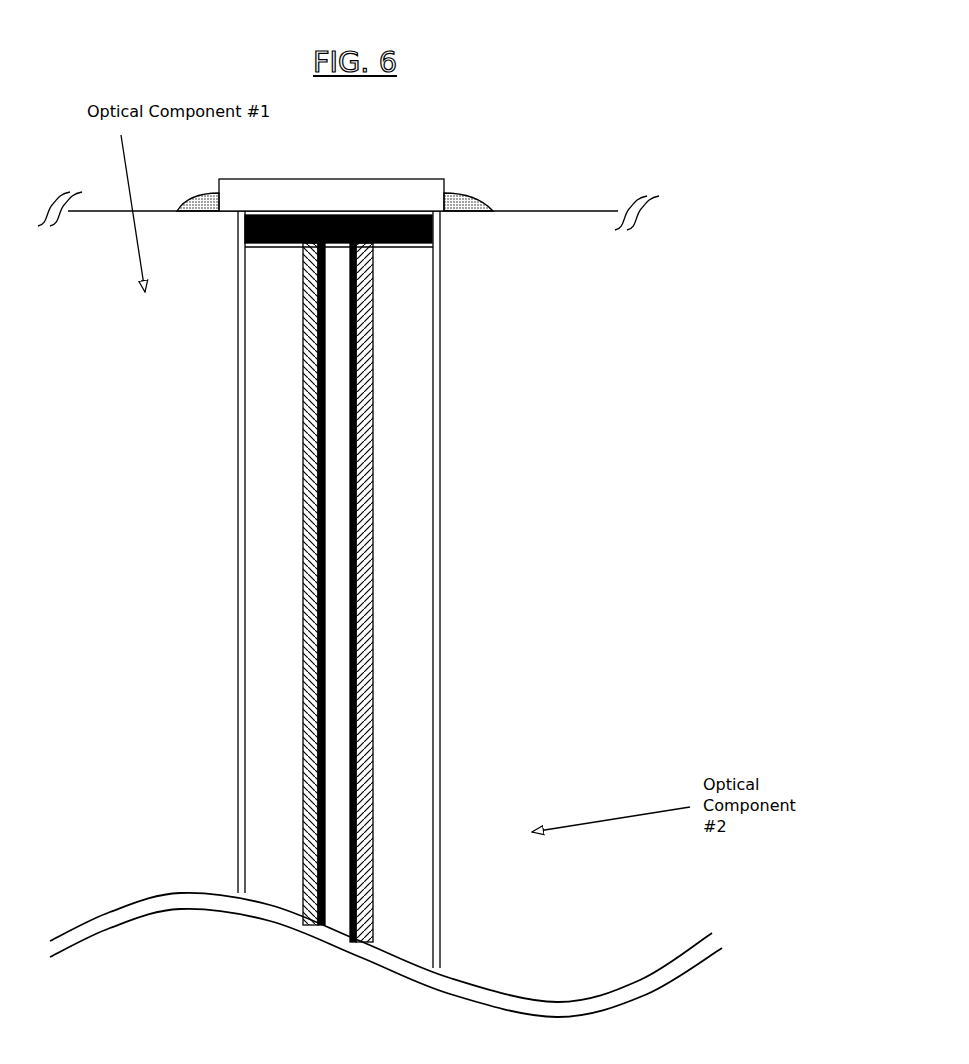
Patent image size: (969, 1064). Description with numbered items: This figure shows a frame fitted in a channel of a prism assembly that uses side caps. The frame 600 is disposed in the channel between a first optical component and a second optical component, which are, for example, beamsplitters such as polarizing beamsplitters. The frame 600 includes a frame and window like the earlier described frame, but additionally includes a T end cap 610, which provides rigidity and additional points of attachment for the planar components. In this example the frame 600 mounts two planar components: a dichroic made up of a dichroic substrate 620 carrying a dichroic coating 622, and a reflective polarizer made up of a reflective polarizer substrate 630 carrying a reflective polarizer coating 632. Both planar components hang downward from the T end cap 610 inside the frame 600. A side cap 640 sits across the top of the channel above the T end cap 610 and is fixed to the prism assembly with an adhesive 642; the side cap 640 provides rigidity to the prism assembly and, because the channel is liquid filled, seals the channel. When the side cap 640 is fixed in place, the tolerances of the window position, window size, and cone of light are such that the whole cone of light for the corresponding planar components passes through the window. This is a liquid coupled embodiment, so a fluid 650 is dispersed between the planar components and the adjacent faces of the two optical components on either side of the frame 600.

The frame 600 is at (325, 358).
The T end cap 610 is at (433, 227).
The dichroic substrate 620 is at (407, 550).
The dichroic coating 622 is at (377, 453).
The reflective polarizer substrate 630 is at (278, 753).
The reflective polarizer coating 632 is at (323, 832).
The side cap 640 is at (448, 181).
The adhesive 642 is at (493, 205).
The fluid 650 is at (240, 595).